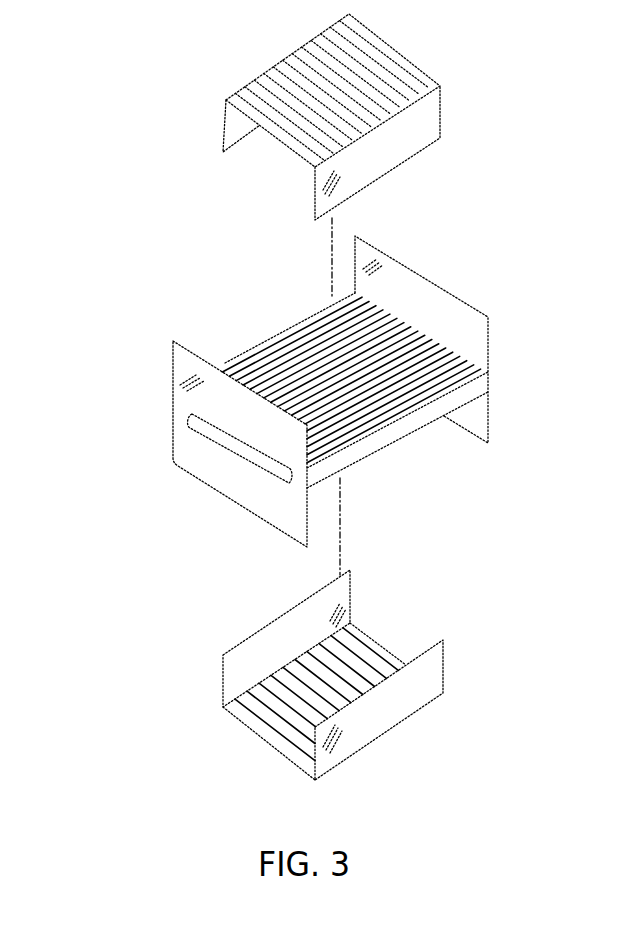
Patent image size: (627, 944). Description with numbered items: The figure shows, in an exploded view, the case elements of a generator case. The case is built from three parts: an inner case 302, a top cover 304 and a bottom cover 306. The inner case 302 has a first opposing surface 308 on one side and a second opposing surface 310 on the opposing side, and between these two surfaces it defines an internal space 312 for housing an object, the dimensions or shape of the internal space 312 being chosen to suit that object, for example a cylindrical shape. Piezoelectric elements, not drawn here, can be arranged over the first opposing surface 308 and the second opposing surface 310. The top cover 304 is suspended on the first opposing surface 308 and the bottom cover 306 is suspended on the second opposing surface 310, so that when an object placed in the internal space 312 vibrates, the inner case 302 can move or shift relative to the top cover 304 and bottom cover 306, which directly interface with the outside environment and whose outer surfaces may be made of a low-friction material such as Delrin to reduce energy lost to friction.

The inner case 302 is at (202, 471).
The top cover 304 is at (227, 121).
The bottom cover 306 is at (223, 686).
The first opposing surface 308 is at (255, 362).
The second opposing surface 310 is at (385, 443).
The internal space 312 is at (212, 435).